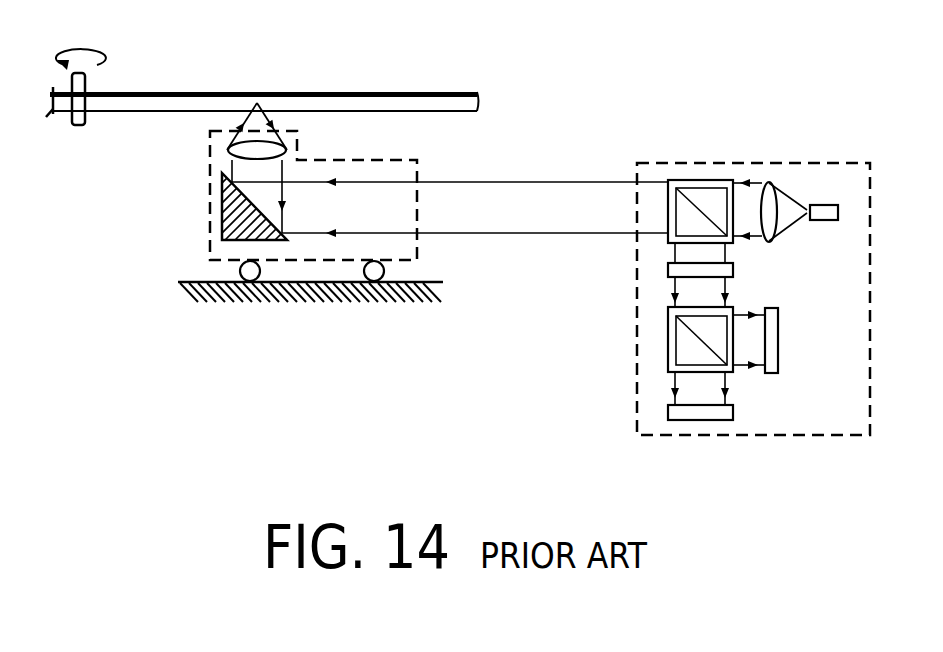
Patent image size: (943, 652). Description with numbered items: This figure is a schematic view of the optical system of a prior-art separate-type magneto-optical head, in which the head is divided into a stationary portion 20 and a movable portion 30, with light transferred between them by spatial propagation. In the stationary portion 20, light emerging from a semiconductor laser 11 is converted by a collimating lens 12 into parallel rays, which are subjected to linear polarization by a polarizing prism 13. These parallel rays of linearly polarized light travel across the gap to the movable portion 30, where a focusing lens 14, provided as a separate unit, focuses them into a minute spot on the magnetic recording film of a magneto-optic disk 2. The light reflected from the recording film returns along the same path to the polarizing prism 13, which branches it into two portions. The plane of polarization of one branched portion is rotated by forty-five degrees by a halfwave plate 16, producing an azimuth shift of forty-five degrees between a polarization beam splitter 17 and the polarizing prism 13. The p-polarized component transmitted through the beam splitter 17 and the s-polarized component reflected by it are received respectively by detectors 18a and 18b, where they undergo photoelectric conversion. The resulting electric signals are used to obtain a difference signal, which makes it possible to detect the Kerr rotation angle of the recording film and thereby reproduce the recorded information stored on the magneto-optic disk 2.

The magneto-optic disk 2 is at (478, 100).
The semiconductor laser 11 is at (824, 222).
The collimating lens 12 is at (775, 240).
The polarizing prism 13 is at (668, 216).
The focusing lens 14 is at (230, 150).
The halfwave plate 16 is at (668, 272).
The polarization beam splitter 17 is at (668, 356).
The detector 18a is at (703, 421).
The detector 18b is at (779, 360).
The stationary portion 20 is at (636, 165).
The movable portion 30 is at (370, 160).